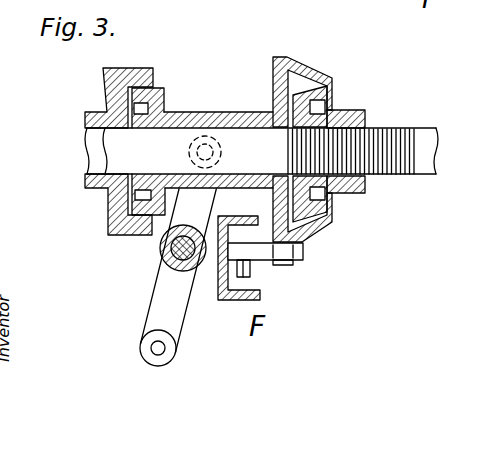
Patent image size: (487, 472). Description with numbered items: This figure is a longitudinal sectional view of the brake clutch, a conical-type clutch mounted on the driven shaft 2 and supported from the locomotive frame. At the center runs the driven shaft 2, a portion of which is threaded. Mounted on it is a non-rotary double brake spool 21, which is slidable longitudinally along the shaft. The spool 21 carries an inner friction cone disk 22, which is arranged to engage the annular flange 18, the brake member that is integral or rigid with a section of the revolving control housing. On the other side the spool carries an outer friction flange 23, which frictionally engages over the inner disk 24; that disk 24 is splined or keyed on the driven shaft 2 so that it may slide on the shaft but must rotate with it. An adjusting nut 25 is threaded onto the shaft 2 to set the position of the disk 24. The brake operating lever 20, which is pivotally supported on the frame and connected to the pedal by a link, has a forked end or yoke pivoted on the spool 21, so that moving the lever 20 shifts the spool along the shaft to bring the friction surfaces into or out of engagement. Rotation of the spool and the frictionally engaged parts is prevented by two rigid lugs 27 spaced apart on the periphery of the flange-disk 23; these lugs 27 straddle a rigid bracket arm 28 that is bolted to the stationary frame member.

The driven shaft 2 is at (398, 127).
The annular flange 18 is at (134, 67).
The brake operating lever 20 is at (157, 309).
The double brake spool 21 is at (245, 127).
The inner friction cone disk 22 is at (165, 88).
The outer friction flange 23 is at (313, 70).
The inner disk 24 is at (328, 95).
The adjusting nut 25 is at (353, 193).
The rigid lugs 27 is at (290, 266).
The bracket arm 28 is at (305, 253).